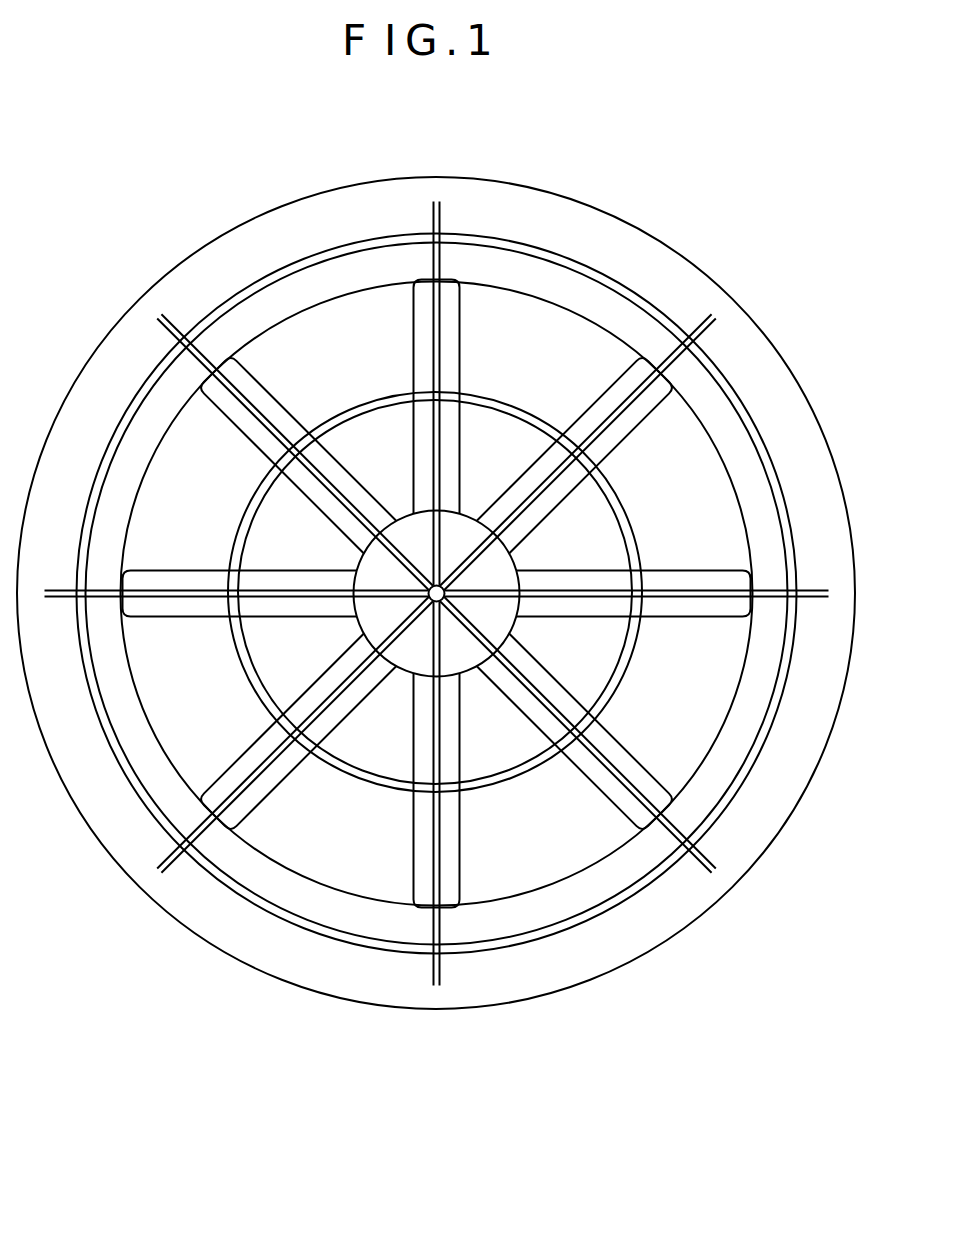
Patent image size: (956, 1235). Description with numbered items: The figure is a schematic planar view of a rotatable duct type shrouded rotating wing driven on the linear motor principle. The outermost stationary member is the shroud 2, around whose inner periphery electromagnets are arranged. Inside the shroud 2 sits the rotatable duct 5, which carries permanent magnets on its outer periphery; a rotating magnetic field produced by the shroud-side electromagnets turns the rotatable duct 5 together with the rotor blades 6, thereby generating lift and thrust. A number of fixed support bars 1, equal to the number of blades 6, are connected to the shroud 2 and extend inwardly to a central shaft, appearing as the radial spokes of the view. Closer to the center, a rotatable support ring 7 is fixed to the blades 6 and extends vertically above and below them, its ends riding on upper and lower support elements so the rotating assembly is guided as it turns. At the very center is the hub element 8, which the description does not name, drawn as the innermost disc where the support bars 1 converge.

The fixed support bar 1 is at (168, 860).
The shroud 2 is at (277, 958).
The rotatable duct 5 is at (377, 922).
The rotor blade 6 is at (453, 845).
The rotatable support ring 7 is at (493, 783).
The central hub 8 is at (467, 658).